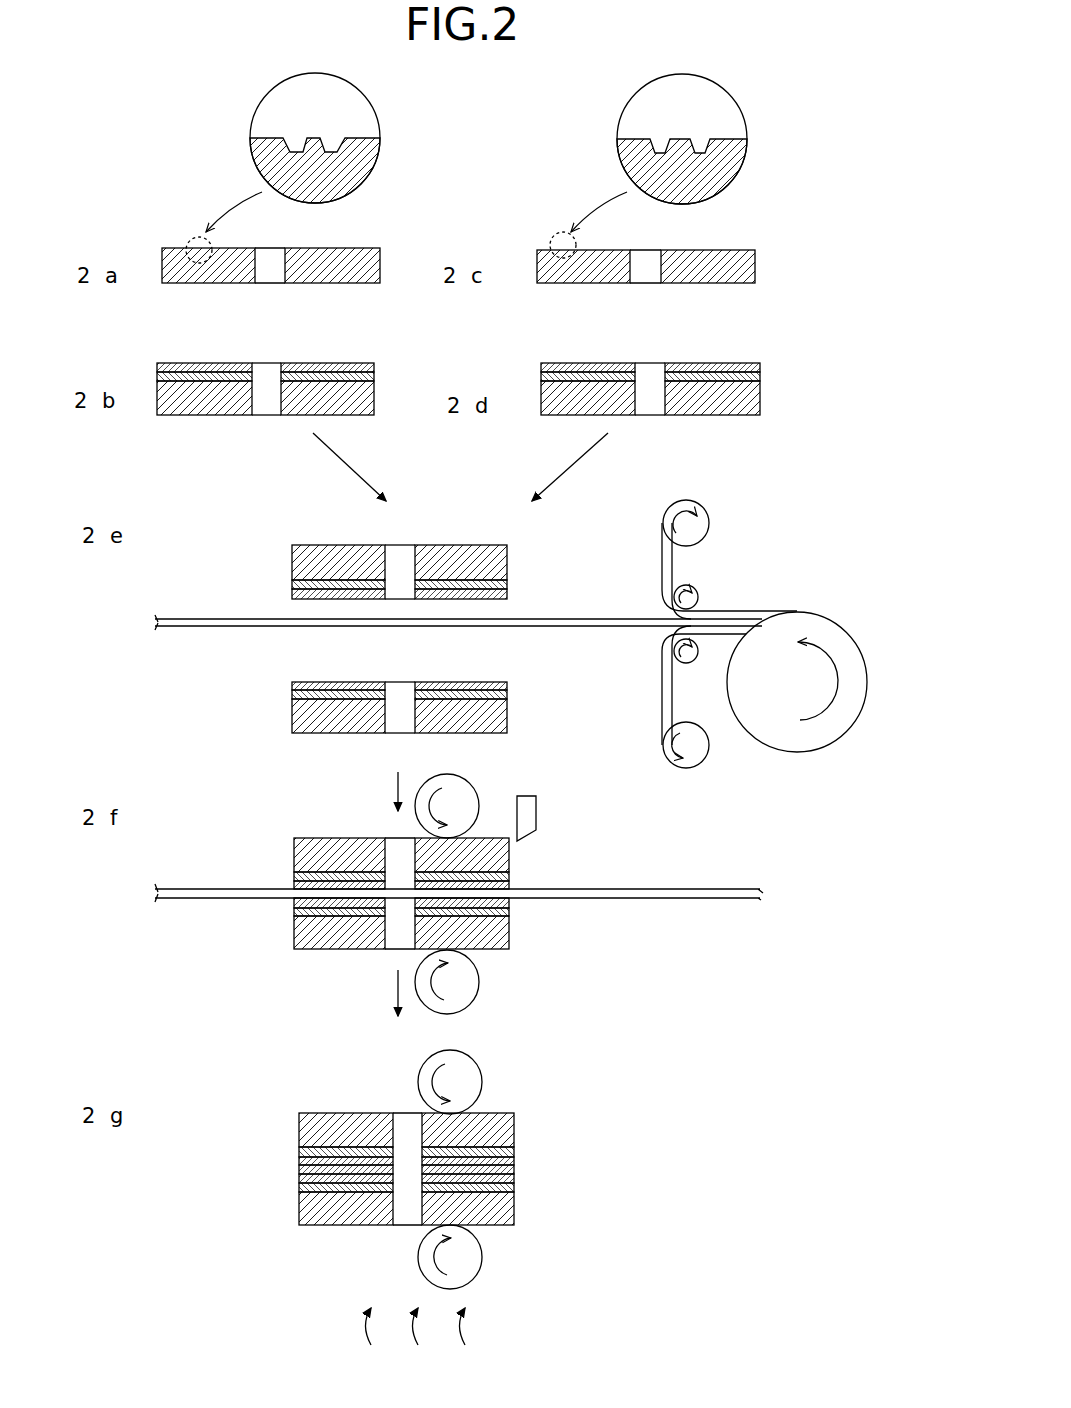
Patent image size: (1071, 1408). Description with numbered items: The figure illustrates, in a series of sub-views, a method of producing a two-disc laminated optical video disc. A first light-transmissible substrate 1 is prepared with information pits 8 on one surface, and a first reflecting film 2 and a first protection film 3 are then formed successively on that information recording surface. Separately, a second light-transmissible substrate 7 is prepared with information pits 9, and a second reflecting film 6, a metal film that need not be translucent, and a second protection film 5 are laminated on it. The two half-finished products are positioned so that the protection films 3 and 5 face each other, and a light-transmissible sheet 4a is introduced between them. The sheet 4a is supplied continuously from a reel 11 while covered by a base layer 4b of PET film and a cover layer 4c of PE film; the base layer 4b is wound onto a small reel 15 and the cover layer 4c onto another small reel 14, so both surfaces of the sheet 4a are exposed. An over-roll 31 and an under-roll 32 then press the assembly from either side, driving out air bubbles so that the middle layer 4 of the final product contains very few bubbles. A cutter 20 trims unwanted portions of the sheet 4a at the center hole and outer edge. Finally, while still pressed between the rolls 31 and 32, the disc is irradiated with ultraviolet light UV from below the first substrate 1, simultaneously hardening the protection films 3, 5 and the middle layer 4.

The first light-transmissible substrate 1 is at (377, 270).
The first reflecting film 2 is at (374, 378).
The first protection film 3 is at (376, 368).
The middle layer 4 is at (240, 888).
The light-transmissible sheet 4a is at (175, 617).
The base layer 4b is at (662, 685).
The cover layer 4c is at (662, 572).
The second protection film 5 is at (762, 368).
The second reflecting film 6 is at (760, 380).
The second light-transmissible substrate 7 is at (745, 270).
The information pits 8 is at (333, 142).
The information pits 9 is at (705, 142).
The reel 11 is at (826, 625).
The small reel 14 is at (708, 512).
The small reel 15 is at (703, 762).
The cutter 20 is at (537, 808).
The over-roll 31 is at (468, 798).
The under-roll 32 is at (467, 972).
The ultraviolet light UV is at (470, 1330).